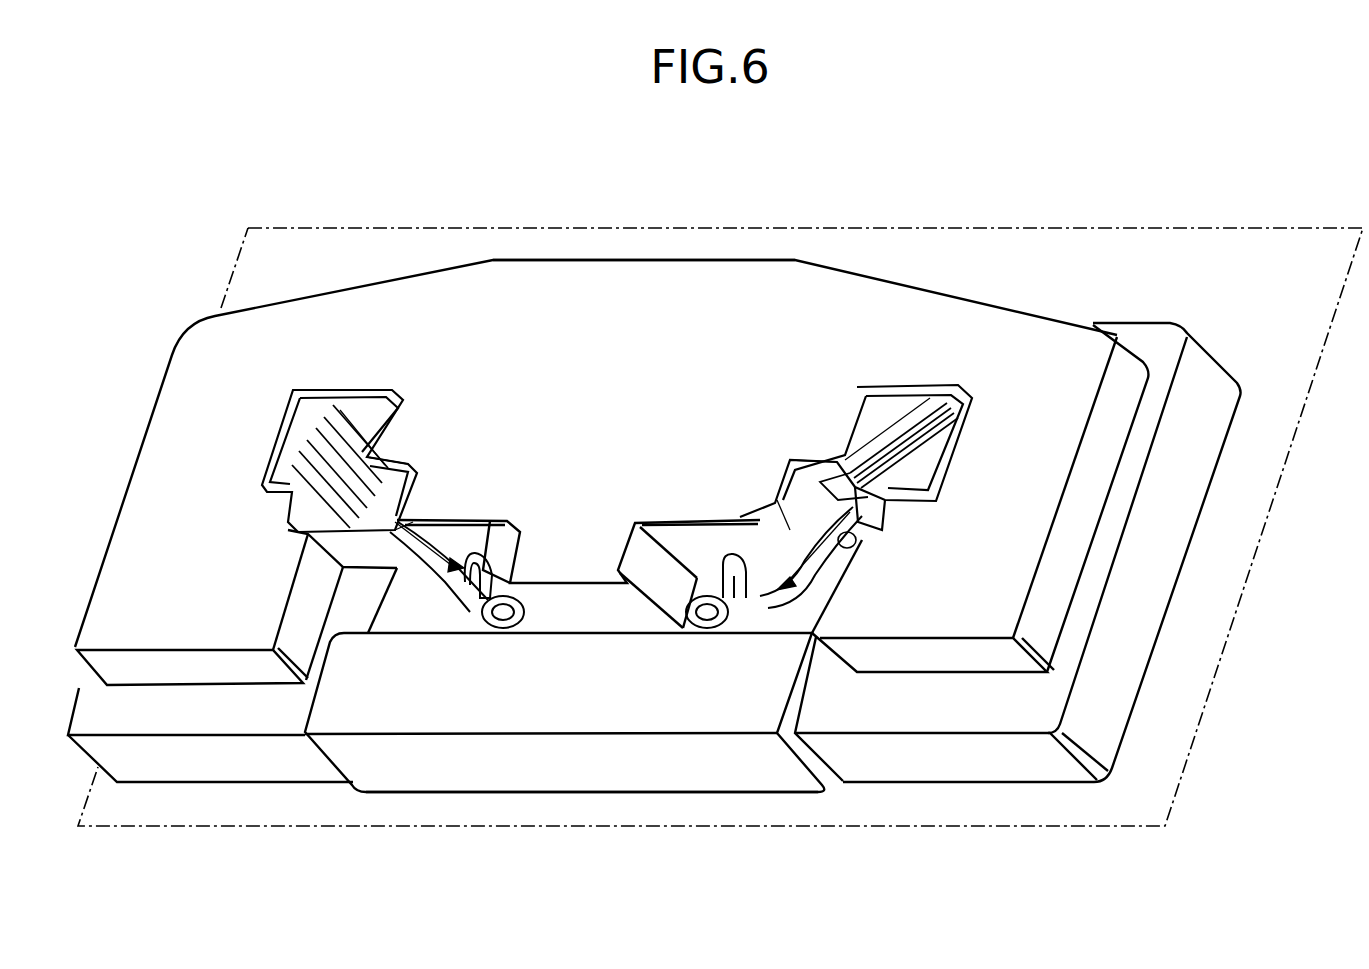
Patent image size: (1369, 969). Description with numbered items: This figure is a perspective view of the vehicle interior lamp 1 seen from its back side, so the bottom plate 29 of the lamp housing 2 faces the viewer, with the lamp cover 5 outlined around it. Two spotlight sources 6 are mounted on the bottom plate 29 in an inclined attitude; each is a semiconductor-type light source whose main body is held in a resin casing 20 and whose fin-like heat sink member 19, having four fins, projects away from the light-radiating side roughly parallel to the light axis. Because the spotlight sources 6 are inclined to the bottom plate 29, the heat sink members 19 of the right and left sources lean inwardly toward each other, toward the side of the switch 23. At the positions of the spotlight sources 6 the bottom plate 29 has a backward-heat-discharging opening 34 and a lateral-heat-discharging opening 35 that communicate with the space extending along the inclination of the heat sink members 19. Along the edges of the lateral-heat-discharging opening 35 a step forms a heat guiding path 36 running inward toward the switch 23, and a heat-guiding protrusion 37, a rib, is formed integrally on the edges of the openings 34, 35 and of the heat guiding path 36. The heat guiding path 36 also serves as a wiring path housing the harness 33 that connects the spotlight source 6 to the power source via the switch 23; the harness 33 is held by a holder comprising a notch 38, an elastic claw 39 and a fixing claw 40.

The vehicle interior lamp 1 is at (1332, 224).
The lamp housing 2 is at (560, 250).
The lamp cover 5 is at (1250, 245).
The spotlight source 6 is at (300, 430).
The fin-like heat sink member 19 is at (318, 410).
The casing 20 is at (855, 543).
The switch 23 is at (444, 795).
The bottom plate 29 is at (477, 273).
The harness 33 is at (445, 605).
The backward-heat-discharging opening 34 is at (363, 417).
The lateral-heat-discharging opening 35 is at (370, 457).
The heat guiding path 36 is at (427, 622).
The heat-guiding protrusion 37 is at (260, 467).
The notch 38 is at (417, 527).
The elastic claw 39 is at (473, 627).
The fixing claw 40 is at (480, 556).